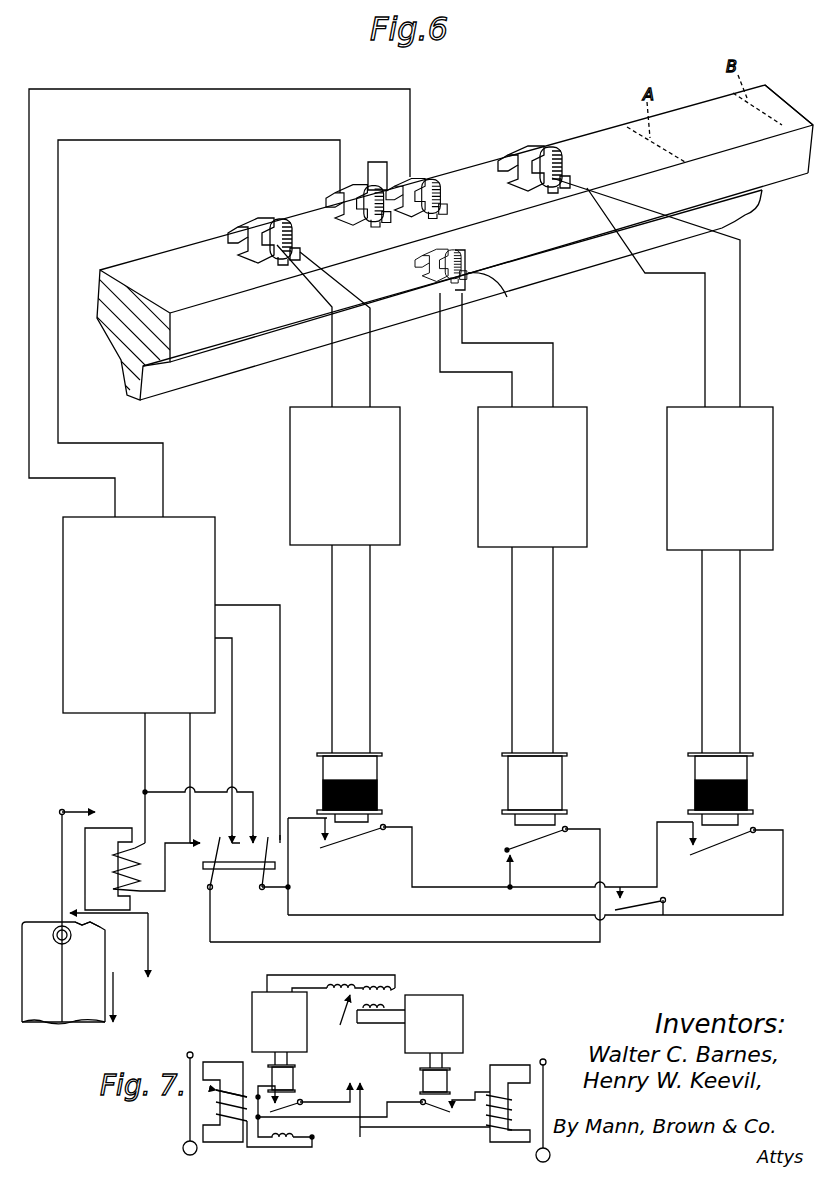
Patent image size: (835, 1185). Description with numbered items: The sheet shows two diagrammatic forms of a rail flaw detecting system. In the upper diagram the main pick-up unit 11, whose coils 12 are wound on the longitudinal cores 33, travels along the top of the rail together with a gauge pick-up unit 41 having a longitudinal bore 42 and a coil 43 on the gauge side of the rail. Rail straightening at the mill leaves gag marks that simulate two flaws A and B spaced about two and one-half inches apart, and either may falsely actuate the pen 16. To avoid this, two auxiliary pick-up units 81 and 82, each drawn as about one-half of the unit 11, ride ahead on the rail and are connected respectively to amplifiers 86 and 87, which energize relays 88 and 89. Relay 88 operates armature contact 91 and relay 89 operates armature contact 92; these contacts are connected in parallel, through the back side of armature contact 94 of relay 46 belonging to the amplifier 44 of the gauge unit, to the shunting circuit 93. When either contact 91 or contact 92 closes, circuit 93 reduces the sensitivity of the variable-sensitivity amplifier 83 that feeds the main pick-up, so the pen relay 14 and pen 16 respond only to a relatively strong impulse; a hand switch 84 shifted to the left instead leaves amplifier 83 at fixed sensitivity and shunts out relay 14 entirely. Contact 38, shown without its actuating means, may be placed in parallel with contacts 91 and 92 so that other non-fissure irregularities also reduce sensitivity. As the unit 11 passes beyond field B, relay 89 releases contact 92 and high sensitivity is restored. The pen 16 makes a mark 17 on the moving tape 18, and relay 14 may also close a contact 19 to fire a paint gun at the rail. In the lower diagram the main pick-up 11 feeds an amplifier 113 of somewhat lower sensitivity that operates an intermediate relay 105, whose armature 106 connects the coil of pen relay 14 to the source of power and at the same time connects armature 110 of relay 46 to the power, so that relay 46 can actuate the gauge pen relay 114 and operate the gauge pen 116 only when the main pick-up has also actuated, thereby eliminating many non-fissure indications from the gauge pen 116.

In FIG. 6, the main pick-up unit 11 is at (358, 180).
In FIG. 7, the main pick-up unit 11 is at (343, 1020).
In FIG. 7, the coils 12 is at (338, 1001).
In FIG. 6, the pen relay 14 is at (142, 871).
In FIG. 7, the pen relay 14 is at (258, 1092).
In FIG. 6, the pen 16 is at (62, 916).
In FIG. 7, the pen 16 is at (174, 1104).
In FIG. 6, the mark 17 is at (85, 968).
In FIG. 6, the moving tape 18 is at (63, 1035).
In FIG. 6, the contact 19 is at (106, 932).
In FIG. 6, the longitudinal cores 33 is at (431, 199).
In FIG. 6, the contact 38 is at (640, 915).
In FIG. 6, the gauge pick-up unit 41 is at (492, 296).
In FIG. 7, the gauge pick-up unit 41 is at (390, 994).
In FIG. 6, the longitudinal bore 42 is at (421, 266).
In FIG. 6, the coil 43 is at (480, 264).
In FIG. 6, the amplifier 44 is at (522, 523).
In FIG. 7, the amplifier 44 is at (451, 1024).
In FIG. 6, the relay 46 is at (553, 789).
In FIG. 7, the relay 46 is at (450, 1073).
In FIG. 6, the auxiliary pick-up unit 81 is at (534, 148).
In FIG. 6, the auxiliary pick-up unit 82 is at (299, 293).
In FIG. 6, the amplifier 83 is at (171, 680).
In FIG. 6, the hand switch 84 is at (239, 889).
In FIG. 6, the amplifier 86 is at (668, 465).
In FIG. 6, the amplifier 87 is at (348, 566).
In FIG. 6, the relay 88 is at (735, 789).
In FIG. 6, the relay 89 is at (365, 787).
In FIG. 6, the armature contact 91 is at (723, 846).
In FIG. 6, the armature contact 92 is at (353, 843).
In FIG. 6, the shunting circuit 93 is at (496, 891).
In FIG. 6, the armature contact 94 is at (536, 858).
In FIG. 7, the intermediate relay 105 is at (300, 1072).
In FIG. 7, the armature 106 is at (374, 1101).
In FIG. 7, the armature 110 is at (445, 1109).
In FIG. 7, the amplifier 113 is at (307, 1013).
In FIG. 7, the gauge pen relay 114 is at (508, 1092).
In FIG. 7, the gauge pen 116 is at (518, 1112).